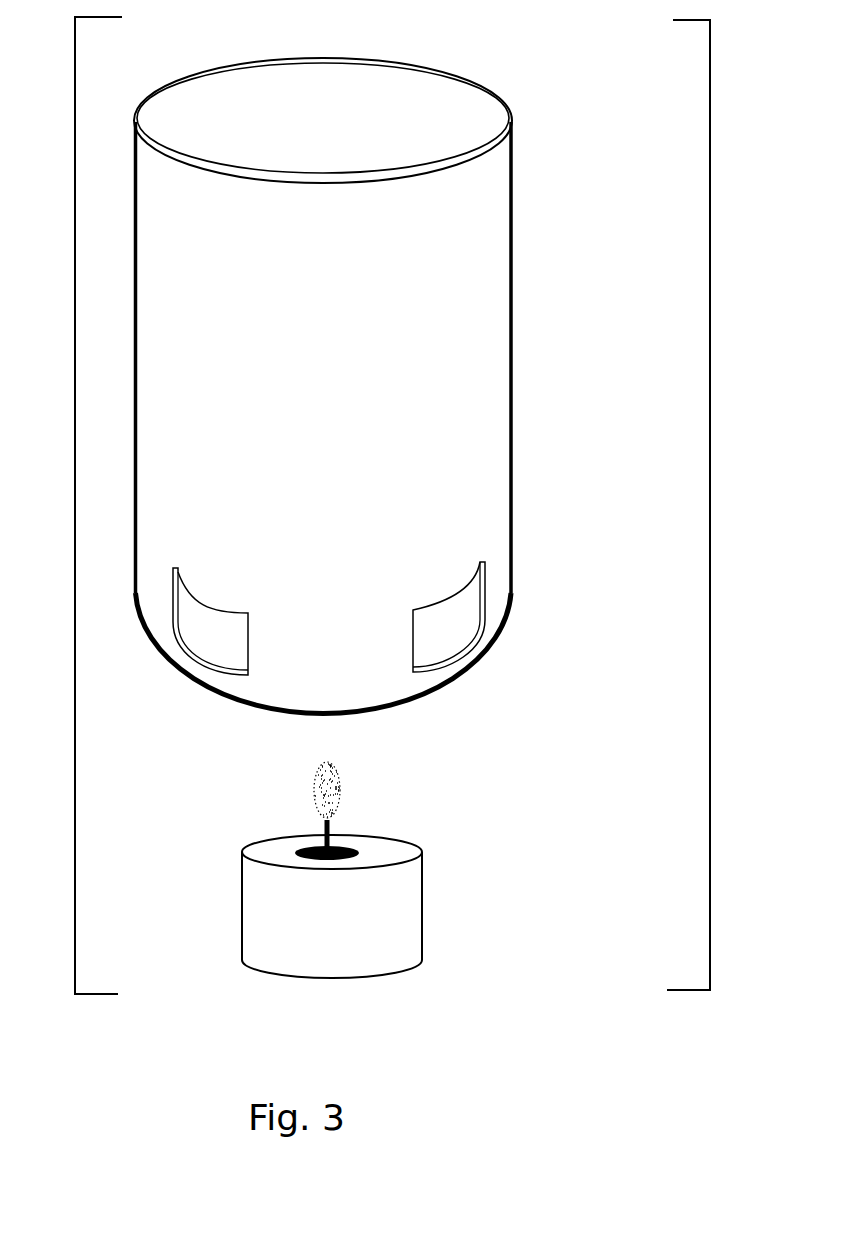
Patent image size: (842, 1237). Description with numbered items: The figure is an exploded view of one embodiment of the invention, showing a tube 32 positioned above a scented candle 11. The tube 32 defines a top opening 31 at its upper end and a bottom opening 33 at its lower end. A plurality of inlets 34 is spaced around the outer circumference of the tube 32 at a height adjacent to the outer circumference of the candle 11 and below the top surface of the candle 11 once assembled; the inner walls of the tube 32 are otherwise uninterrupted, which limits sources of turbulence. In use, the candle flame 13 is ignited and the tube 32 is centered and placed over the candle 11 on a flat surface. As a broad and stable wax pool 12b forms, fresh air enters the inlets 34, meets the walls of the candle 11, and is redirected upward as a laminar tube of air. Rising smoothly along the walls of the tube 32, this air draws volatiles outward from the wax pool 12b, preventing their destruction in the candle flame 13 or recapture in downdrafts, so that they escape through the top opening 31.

The scented candle 11 is at (434, 926).
The wax pool 12b is at (375, 849).
The candle flame 13 is at (352, 781).
The top opening 31 is at (502, 83).
The tube 32 is at (526, 350).
The bottom opening 33 is at (516, 625).
The inlets 34 is at (471, 595).